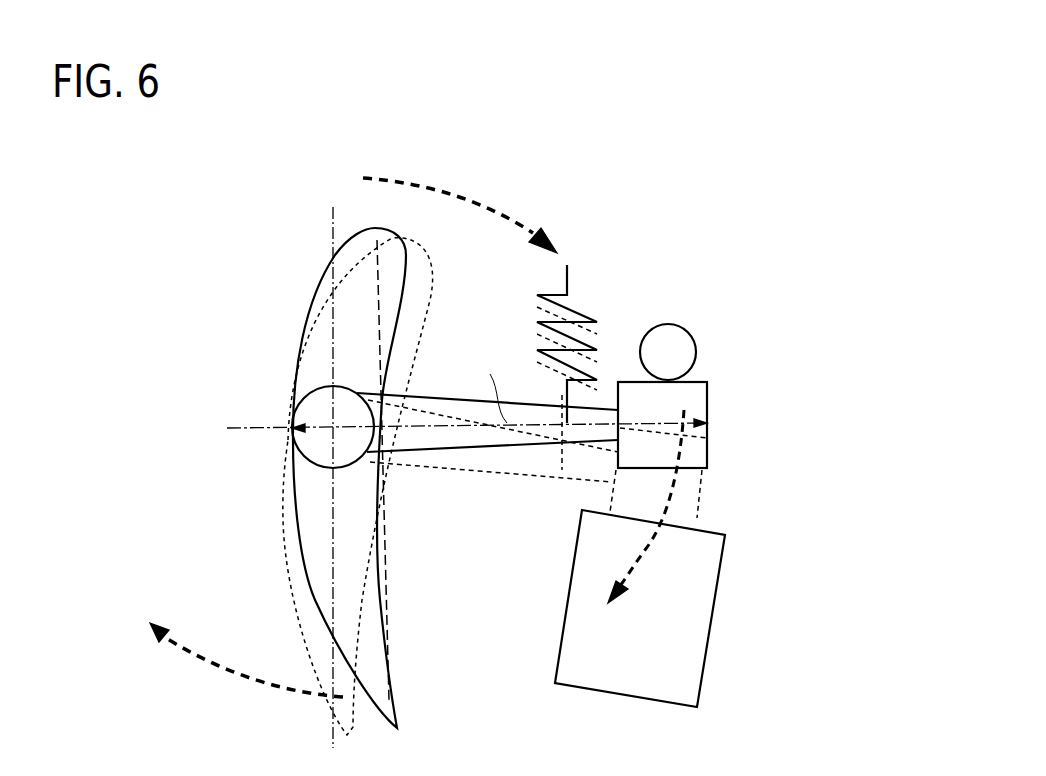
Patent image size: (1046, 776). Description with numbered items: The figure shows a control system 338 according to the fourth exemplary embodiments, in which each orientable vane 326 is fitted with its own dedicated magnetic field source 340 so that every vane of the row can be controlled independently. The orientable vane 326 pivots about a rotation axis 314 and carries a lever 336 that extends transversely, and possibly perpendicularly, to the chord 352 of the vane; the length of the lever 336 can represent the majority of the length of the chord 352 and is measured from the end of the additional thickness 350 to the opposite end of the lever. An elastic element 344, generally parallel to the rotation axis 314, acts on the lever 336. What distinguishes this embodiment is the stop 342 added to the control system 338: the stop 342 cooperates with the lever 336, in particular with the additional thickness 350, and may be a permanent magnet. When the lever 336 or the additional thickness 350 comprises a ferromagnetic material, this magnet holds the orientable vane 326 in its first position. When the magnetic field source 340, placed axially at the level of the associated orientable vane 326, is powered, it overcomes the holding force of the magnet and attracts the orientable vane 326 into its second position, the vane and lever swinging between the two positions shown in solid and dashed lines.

The rotation axis 314 is at (333, 232).
The orientable vane 326 is at (310, 315).
The lever 336 is at (490, 452).
The control system 338 is at (779, 257).
The magnetic field source 340 is at (687, 643).
The stop 342 is at (292, 452).
The elastic element 344 is at (567, 273).
The additional thickness 350 is at (695, 395).
The chord 352 is at (390, 588).